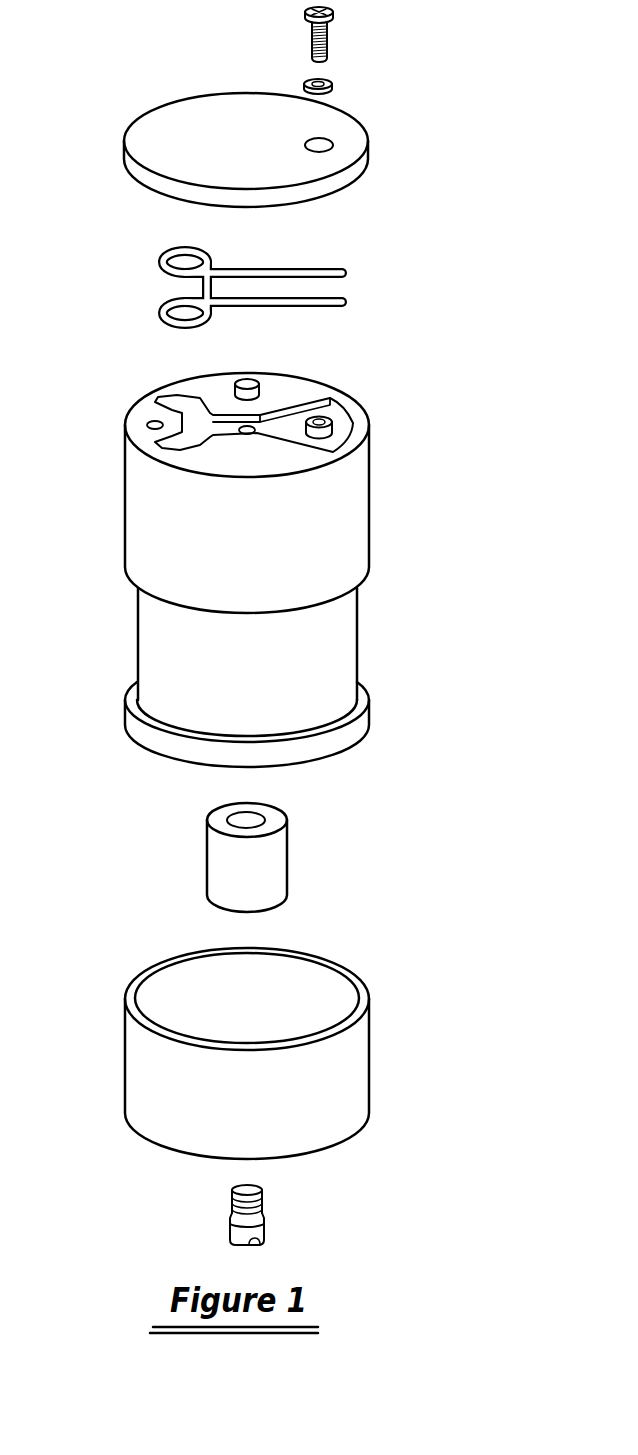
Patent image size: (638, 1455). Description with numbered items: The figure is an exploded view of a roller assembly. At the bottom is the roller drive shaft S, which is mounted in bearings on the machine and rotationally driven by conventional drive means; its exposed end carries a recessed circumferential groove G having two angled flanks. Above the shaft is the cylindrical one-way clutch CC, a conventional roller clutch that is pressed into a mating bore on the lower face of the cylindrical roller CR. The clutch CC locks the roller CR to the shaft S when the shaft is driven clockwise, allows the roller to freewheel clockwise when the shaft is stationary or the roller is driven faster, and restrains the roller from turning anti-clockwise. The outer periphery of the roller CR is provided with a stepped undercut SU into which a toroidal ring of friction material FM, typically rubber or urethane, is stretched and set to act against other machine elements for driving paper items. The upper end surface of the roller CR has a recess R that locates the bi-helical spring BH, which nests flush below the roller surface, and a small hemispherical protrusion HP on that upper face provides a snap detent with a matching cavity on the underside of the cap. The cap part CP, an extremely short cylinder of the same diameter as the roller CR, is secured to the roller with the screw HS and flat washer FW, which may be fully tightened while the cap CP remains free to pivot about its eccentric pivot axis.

The screw HS is at (328, 33).
The flat washer FW is at (335, 88).
The cap part CP is at (370, 157).
The bi-helical spring BH is at (340, 270).
The recess R is at (285, 390).
The hemispherical protrusion HP is at (150, 423).
The cylindrical roller CR is at (370, 427).
The stepped undercut SU is at (377, 682).
The cylindrical one-way clutch CC is at (287, 848).
The friction material FM is at (370, 1047).
The circumferential groove G is at (263, 1203).
The roller drive shaft S is at (264, 1228).